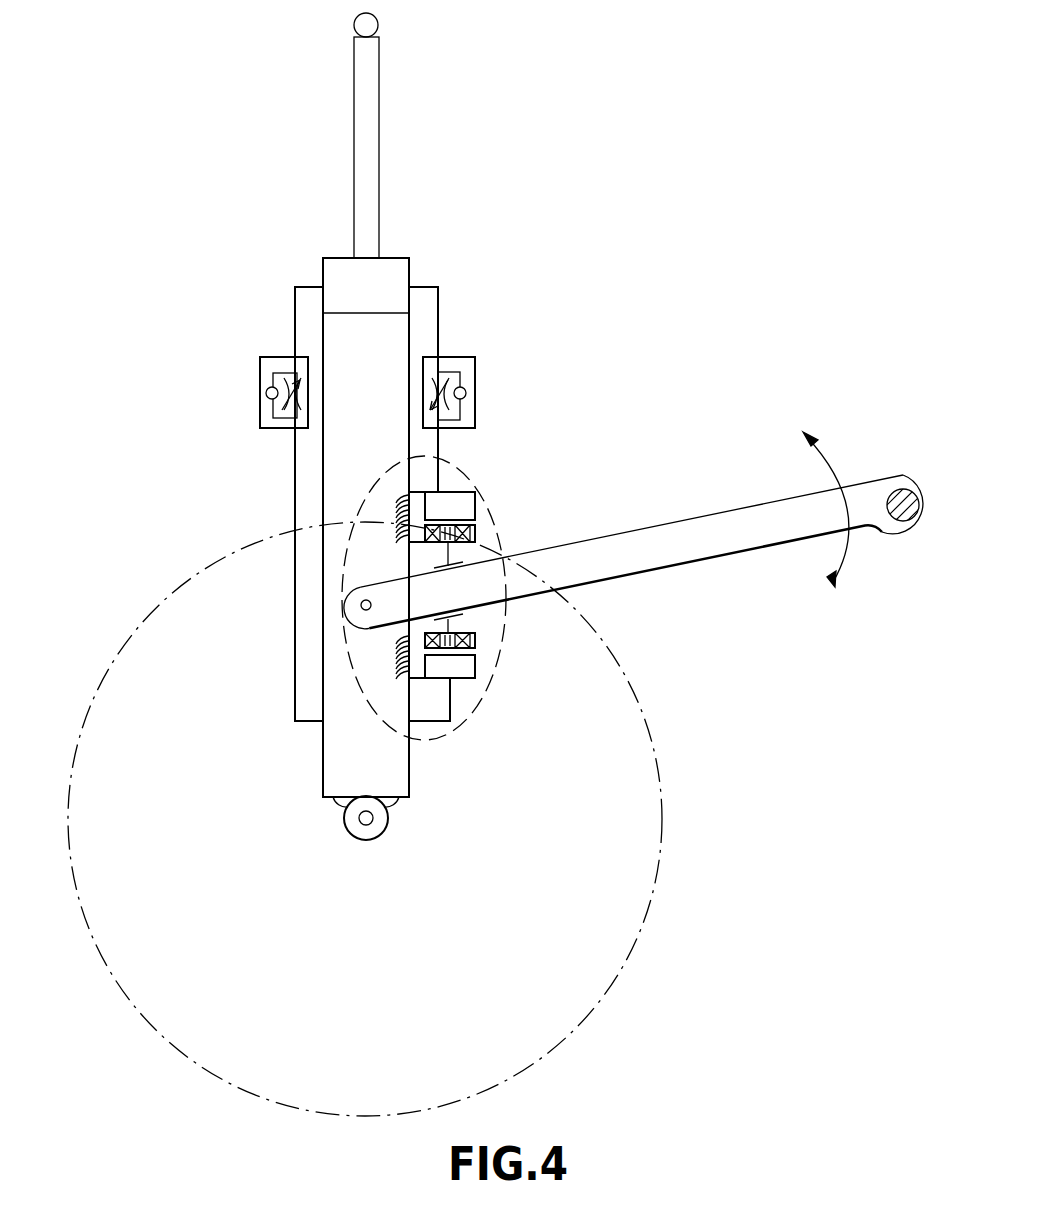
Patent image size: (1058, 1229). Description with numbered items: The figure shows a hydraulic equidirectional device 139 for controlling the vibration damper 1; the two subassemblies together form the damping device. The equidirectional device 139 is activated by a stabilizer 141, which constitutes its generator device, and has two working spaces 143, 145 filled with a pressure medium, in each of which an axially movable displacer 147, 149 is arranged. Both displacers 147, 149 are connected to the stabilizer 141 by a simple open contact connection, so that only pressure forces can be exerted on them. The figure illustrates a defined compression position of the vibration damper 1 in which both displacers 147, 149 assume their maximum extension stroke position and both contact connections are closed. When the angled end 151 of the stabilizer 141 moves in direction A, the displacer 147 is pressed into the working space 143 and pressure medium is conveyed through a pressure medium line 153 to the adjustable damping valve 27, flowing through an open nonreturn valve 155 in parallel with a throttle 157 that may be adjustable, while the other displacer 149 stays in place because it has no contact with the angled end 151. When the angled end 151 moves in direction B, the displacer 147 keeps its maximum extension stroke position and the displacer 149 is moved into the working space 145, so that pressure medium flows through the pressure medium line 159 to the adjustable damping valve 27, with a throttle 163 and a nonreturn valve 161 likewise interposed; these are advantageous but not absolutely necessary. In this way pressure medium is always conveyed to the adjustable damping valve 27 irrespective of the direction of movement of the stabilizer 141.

The vibration damper 1 is at (237, 437).
The adjustable damping valve 27 is at (390, 283).
The equidirectional device 139 is at (468, 463).
The stabilizer 141 is at (890, 495).
The working space 143 is at (473, 492).
The working space 145 is at (460, 668).
The displacer 147 is at (480, 520).
The displacer 149 is at (476, 650).
The angled end 151 is at (640, 548).
The pressure medium line 153 is at (440, 325).
The nonreturn valve 155 is at (467, 392).
The throttle 157 is at (447, 377).
The pressure medium line 159 is at (295, 467).
The nonreturn valve 161 is at (266, 390).
The throttle 163 is at (297, 397).